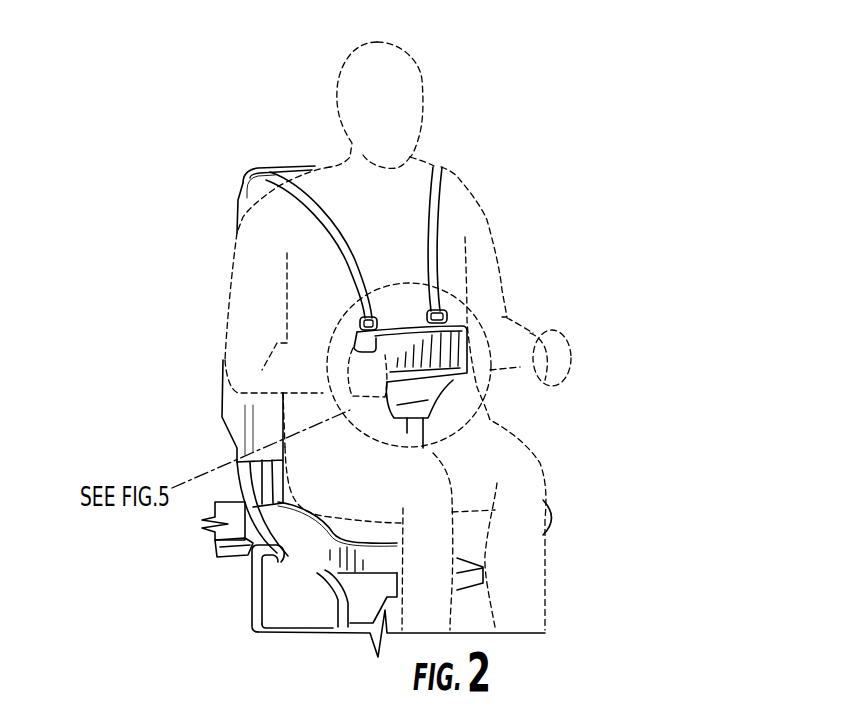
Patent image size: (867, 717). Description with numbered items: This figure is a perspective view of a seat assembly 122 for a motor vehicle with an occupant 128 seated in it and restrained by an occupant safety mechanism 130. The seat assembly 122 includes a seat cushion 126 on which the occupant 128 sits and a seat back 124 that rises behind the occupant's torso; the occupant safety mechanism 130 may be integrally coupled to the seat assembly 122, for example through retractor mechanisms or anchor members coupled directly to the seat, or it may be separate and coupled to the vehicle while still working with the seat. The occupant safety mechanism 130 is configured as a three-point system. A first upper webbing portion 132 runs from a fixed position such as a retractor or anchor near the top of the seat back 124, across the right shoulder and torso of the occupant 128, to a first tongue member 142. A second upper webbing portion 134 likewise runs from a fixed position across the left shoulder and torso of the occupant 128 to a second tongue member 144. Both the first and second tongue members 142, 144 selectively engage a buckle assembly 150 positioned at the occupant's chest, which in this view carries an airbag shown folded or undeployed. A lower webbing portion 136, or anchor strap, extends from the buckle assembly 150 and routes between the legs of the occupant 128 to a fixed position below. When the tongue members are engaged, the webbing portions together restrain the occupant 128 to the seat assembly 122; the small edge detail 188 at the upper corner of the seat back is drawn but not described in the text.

The seat assembly 122 is at (168, 420).
The seat back 124 is at (253, 168).
The seat cushion 126 is at (317, 553).
The occupant 128 is at (397, 108).
The occupant safety mechanism 130 is at (180, 245).
The first upper webbing portion 132 is at (323, 195).
The second upper webbing portion 134 is at (440, 170).
The lower webbing portion 136 is at (492, 421).
The first tongue member 142 is at (359, 321).
The second tongue member 144 is at (440, 300).
The buckle assembly 150 is at (452, 386).
The seat back edge trim 188 is at (277, 175).